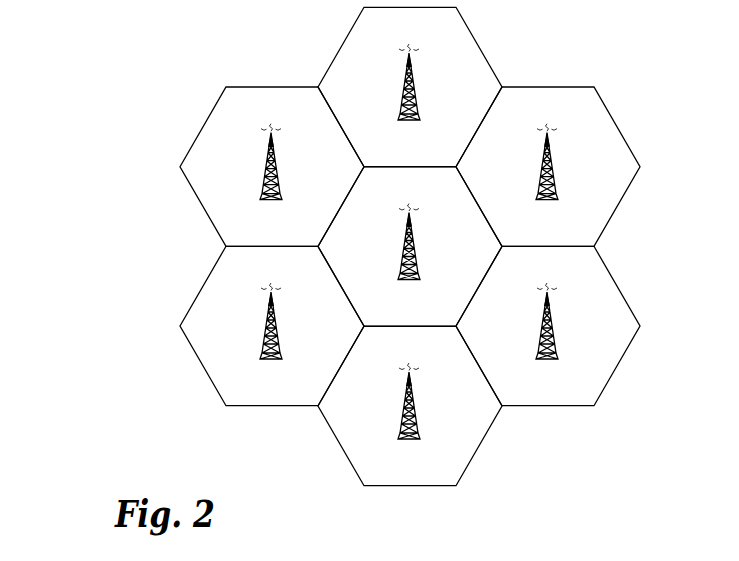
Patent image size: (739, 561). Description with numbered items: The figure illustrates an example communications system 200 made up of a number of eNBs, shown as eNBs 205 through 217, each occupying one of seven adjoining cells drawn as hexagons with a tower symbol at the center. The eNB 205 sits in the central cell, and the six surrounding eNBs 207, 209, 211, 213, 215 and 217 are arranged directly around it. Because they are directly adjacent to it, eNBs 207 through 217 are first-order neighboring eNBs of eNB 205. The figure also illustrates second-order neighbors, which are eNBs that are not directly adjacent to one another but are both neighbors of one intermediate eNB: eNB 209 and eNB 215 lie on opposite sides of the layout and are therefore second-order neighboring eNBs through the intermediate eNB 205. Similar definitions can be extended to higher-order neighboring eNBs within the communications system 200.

The communications system 200 is at (94, 37).
The eNB 205 is at (402, 249).
The eNB 207 is at (542, 328).
The eNB 209 is at (542, 168).
The eNB 211 is at (404, 88).
The eNB 213 is at (266, 168).
The eNB 215 is at (266, 328).
The eNB 217 is at (402, 408).